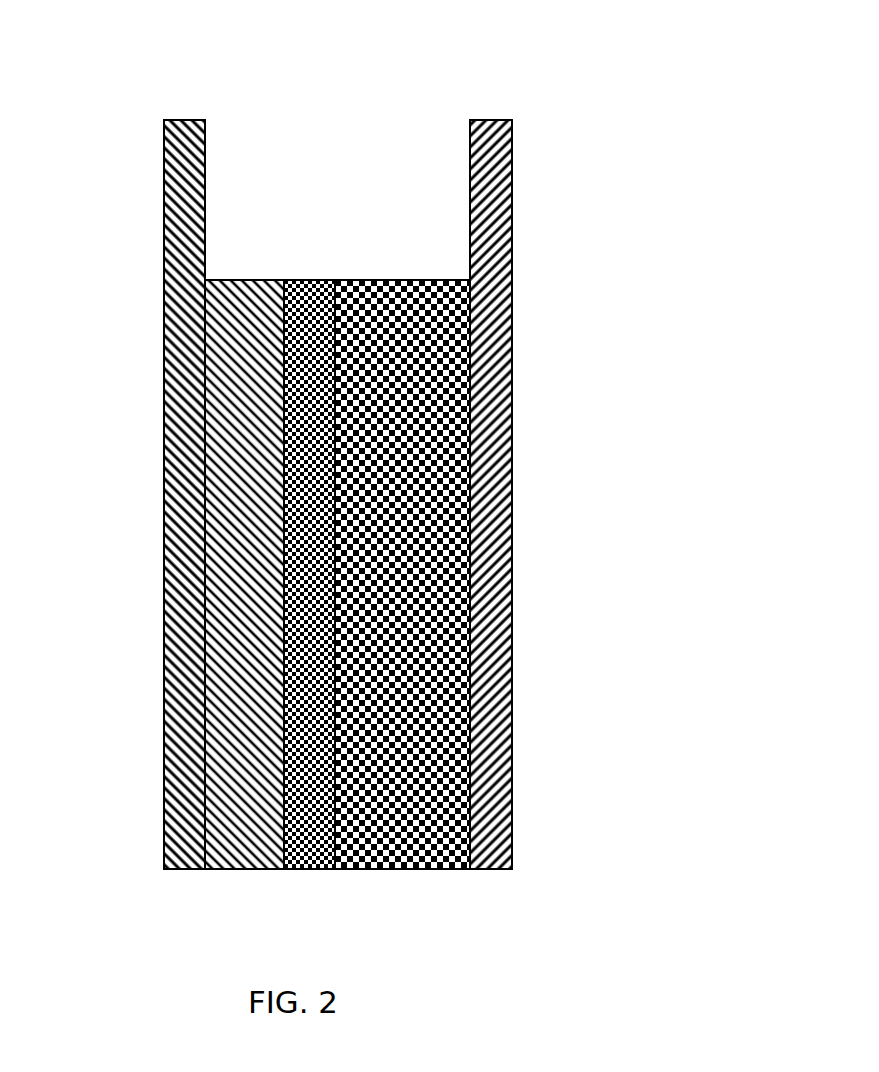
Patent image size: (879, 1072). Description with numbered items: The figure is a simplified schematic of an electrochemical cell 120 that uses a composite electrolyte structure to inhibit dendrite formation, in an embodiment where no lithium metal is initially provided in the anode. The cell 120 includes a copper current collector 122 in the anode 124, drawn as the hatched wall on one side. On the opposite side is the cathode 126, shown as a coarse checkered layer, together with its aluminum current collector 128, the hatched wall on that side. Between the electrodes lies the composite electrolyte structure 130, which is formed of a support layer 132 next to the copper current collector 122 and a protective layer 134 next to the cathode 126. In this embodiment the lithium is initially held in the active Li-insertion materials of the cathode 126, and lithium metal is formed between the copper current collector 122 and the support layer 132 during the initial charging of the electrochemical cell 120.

The electrochemical cell 120 is at (450, 60).
The copper current collector 122 is at (156, 218).
The anode 124 is at (132, 887).
The cathode 126 is at (417, 861).
The aluminum current collector 128 is at (505, 177).
The composite electrolyte structure 130 is at (268, 237).
The support layer 132 is at (220, 861).
The protective layer 134 is at (302, 861).